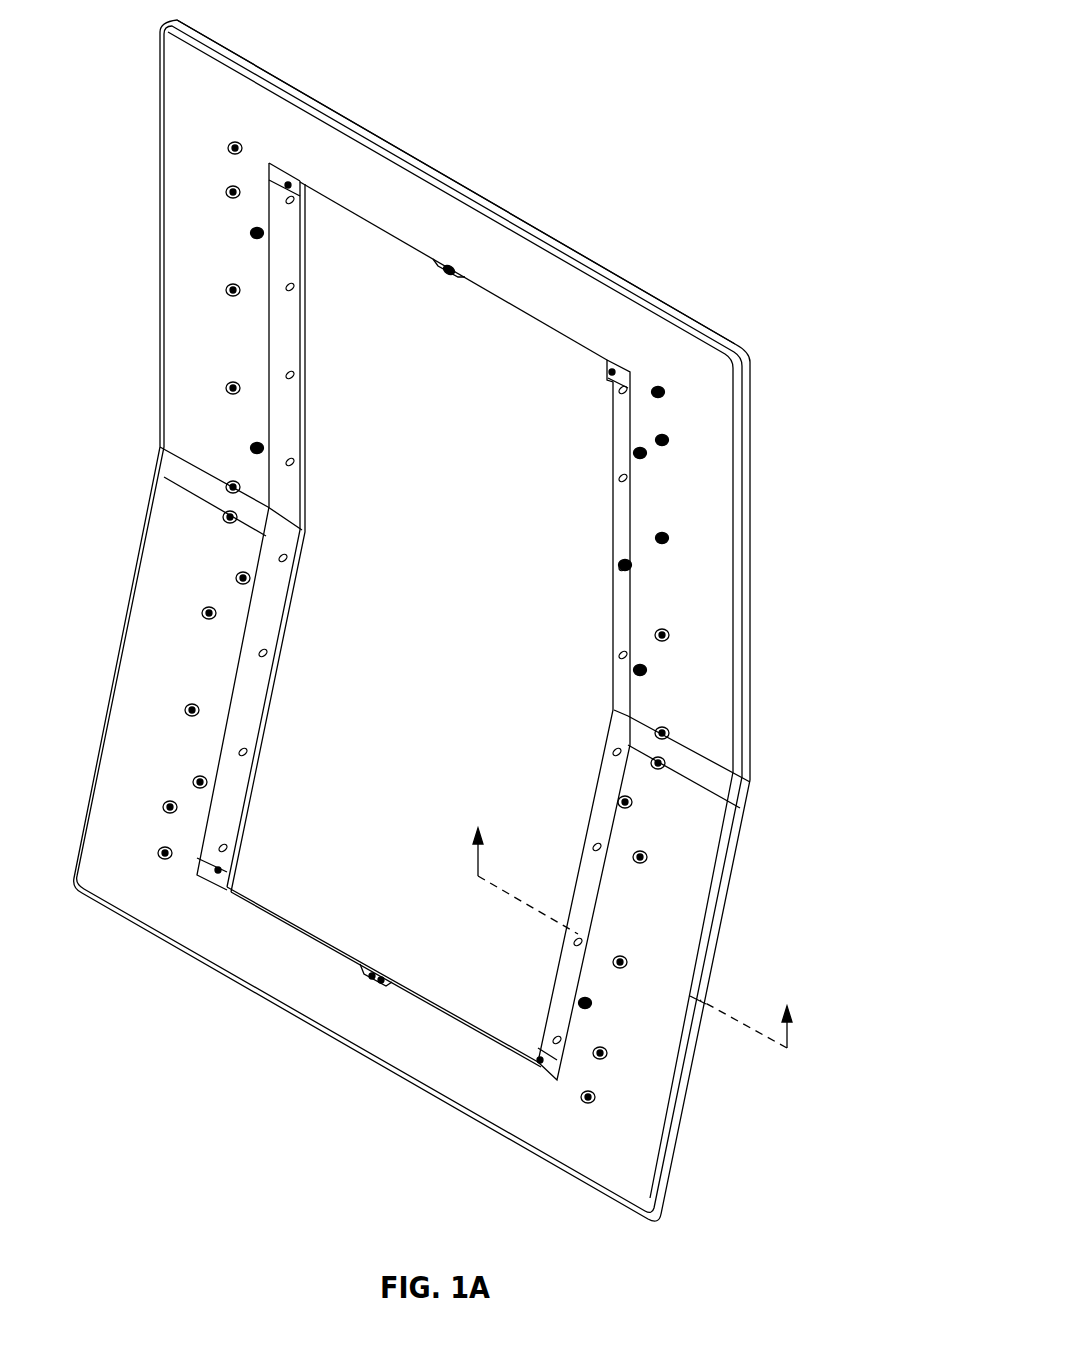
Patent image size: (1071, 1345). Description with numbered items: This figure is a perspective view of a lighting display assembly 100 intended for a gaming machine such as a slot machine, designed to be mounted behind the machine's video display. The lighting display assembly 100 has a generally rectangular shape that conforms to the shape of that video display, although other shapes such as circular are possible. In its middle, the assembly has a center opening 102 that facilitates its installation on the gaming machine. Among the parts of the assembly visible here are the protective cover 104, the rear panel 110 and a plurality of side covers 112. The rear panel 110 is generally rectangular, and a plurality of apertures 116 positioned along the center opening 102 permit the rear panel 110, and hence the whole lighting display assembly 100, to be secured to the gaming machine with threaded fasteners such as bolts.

The lighting display assembly 100 is at (487, 620).
The center opening 102 is at (548, 513).
The protective cover 104 is at (487, 620).
The rear panel 110 is at (620, 628).
The side covers 112 is at (495, 208).
The apertures 116 is at (290, 558).